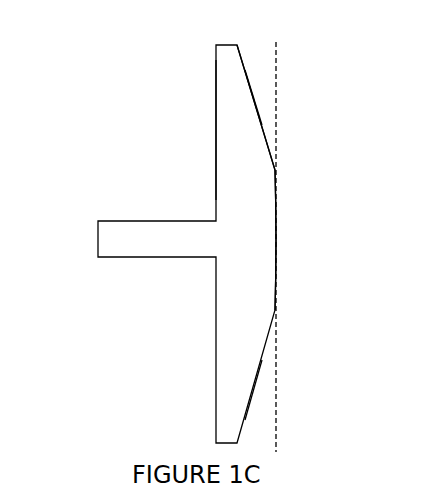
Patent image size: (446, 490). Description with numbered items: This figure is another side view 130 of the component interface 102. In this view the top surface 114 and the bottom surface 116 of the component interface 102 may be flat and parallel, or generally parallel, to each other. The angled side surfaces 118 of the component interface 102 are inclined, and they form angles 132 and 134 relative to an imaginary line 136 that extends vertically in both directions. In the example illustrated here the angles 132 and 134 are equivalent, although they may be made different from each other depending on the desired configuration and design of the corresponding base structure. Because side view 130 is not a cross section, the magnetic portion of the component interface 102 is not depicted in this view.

The component interface 102 is at (363, 128).
The top surface 114 is at (213, 168).
The bottom surface 116 is at (277, 227).
The angled side surfaces 118 is at (250, 80).
The side view 130 is at (187, 244).
The angle 132 is at (258, 100).
The angle 134 is at (258, 378).
The imaginary line 136 is at (277, 237).